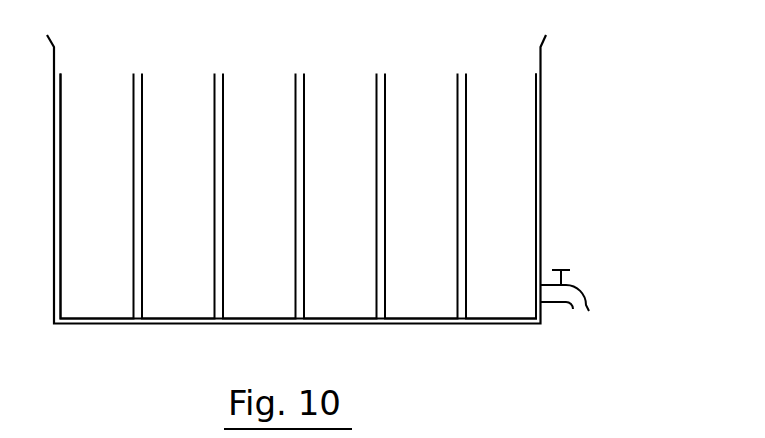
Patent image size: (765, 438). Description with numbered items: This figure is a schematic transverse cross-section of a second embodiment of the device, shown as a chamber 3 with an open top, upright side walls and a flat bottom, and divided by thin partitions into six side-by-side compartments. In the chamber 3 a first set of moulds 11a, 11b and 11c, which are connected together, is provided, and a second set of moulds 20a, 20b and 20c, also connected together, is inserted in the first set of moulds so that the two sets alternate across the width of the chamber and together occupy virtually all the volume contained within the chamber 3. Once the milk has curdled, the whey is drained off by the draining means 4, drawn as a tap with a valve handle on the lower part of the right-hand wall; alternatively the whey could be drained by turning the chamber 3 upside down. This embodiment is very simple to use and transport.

The chamber 3 is at (541, 173).
The means for draining whey 4 is at (593, 297).
The mould of first set 11a is at (97, 196).
The mould of second set 20a is at (178, 196).
The mould of first set 11b is at (259, 196).
The mould of second set 20b is at (340, 196).
The mould of first set 11c is at (421, 196).
The mould of second set 20c is at (501, 196).